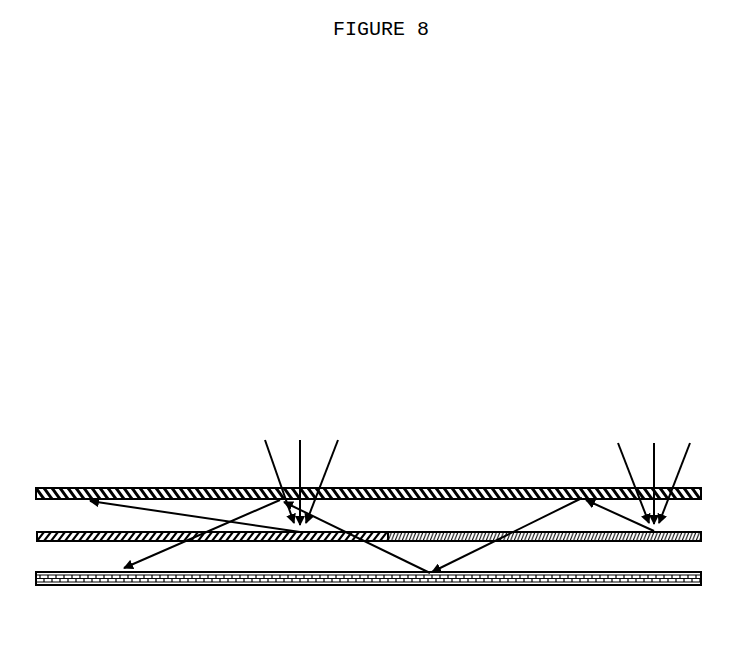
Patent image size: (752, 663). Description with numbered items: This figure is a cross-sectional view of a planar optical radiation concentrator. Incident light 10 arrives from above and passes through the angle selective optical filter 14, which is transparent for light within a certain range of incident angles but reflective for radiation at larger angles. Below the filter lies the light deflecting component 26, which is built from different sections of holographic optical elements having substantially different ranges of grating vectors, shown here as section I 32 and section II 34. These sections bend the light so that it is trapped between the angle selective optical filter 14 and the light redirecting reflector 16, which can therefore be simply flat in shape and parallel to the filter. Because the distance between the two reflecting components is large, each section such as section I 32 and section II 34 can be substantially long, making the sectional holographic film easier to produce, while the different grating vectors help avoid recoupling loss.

The incident light 10 is at (263, 457).
The angle selective optical filter 14 is at (499, 490).
The light deflecting component 26 is at (378, 515).
The section II 34 is at (203, 539).
The section I 32 is at (545, 538).
The light redirecting reflector 16 is at (432, 584).